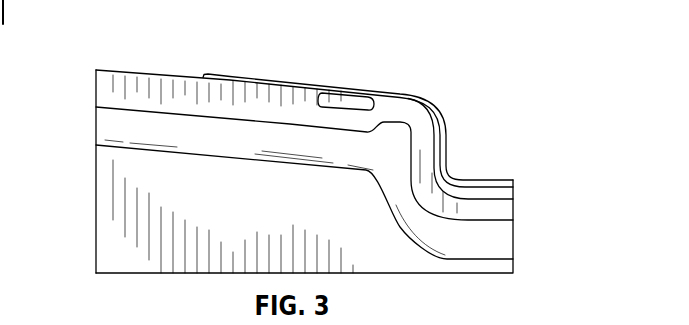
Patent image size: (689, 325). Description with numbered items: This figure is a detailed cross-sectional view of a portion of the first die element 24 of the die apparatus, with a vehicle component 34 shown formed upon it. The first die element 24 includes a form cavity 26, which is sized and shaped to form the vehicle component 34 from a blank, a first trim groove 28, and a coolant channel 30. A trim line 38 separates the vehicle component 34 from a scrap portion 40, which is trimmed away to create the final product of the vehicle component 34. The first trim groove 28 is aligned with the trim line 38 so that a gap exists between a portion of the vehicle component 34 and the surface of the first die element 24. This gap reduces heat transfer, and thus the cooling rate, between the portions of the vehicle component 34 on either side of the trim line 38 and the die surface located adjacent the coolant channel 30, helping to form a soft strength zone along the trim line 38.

The first die element 24 is at (96, 90).
The form cavity 26 is at (456, 112).
The first trim groove 28 is at (317, 103).
The coolant channel 30 is at (122, 148).
The vehicle component 34 is at (452, 155).
The trim line 38 is at (345, 94).
The scrap portion 40 is at (286, 74).